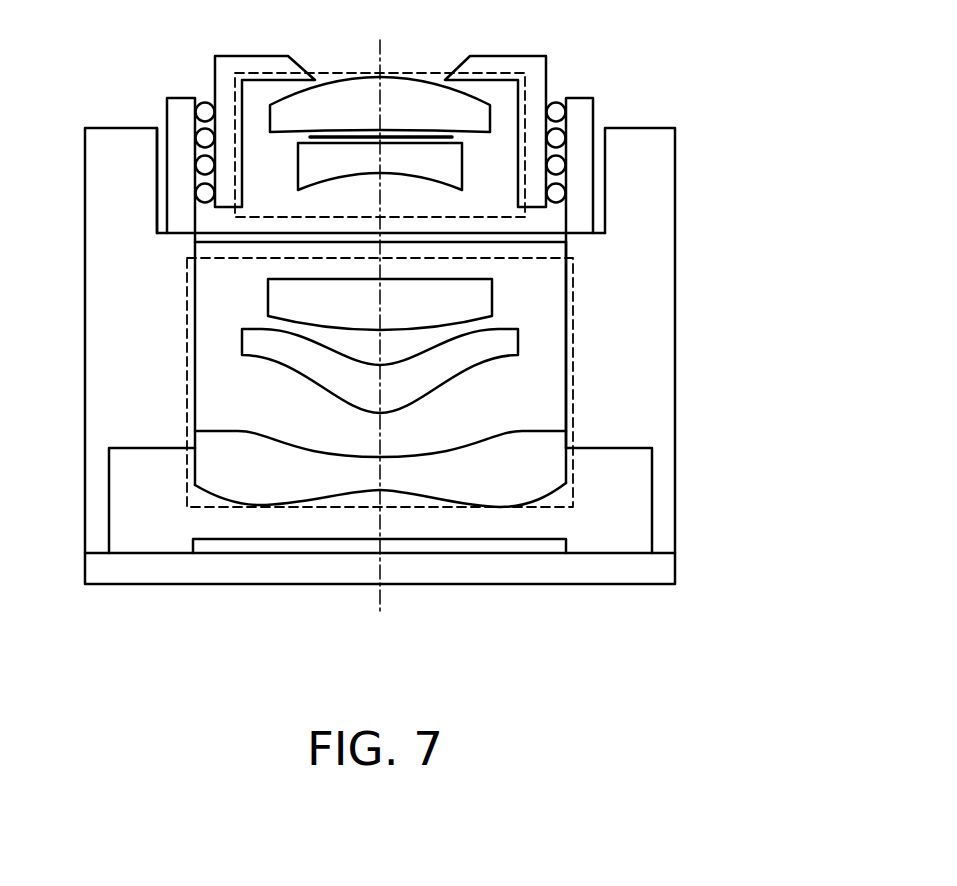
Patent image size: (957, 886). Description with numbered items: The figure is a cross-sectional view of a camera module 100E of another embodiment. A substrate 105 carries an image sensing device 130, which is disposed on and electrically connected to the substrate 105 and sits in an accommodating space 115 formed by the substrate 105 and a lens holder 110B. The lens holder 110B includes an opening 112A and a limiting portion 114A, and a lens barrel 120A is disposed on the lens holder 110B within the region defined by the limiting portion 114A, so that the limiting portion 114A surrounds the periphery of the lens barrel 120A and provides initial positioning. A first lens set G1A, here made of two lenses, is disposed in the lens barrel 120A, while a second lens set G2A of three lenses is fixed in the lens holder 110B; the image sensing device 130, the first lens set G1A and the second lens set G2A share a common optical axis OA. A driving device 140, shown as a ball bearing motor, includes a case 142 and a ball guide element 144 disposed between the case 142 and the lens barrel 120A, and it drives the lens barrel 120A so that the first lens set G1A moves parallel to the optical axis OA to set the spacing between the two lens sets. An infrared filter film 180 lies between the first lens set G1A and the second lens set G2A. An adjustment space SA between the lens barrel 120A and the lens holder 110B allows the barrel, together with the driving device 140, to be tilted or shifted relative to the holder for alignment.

The camera module 100E is at (792, 680).
The substrate 105 is at (657, 570).
The lens holder 110B is at (675, 252).
The opening 112A is at (564, 277).
The limiting portion 114A is at (650, 303).
The accommodating space 115 is at (130, 492).
The lens barrel 120A is at (537, 72).
The image sensing device 130 is at (480, 547).
The driving device 140 is at (486, 164).
The case 142 is at (580, 153).
The ball guide element 144 is at (553, 110).
The infrared filter film 180 is at (208, 238).
The first lens set G1A is at (333, 72).
The second lens set G2A is at (573, 470).
The optical axis OA is at (380, 350).
The adjustment space SA is at (162, 128).